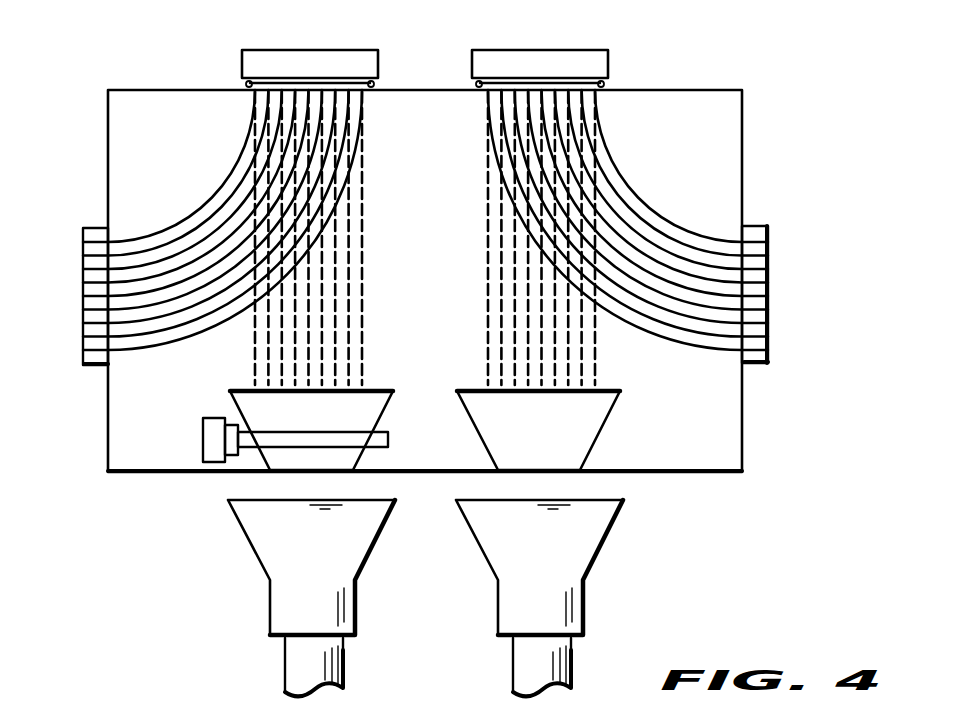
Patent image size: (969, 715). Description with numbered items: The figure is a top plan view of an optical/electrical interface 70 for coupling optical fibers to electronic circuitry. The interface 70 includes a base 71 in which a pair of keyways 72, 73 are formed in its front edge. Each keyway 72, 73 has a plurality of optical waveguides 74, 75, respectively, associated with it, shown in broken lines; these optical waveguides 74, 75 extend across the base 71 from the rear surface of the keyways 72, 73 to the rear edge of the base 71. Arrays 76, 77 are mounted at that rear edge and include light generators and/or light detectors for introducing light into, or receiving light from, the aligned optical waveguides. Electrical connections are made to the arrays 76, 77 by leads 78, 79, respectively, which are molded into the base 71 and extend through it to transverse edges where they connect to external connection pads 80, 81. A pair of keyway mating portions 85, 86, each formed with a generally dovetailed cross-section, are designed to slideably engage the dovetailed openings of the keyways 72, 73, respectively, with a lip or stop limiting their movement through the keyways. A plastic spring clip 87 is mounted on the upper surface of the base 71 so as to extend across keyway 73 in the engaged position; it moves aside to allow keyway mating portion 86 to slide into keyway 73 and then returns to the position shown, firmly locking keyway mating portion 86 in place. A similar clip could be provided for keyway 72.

The optical/electrical interface 70 is at (729, 590).
The base 71 is at (724, 145).
The keyway 72 is at (597, 420).
The keyway 73 is at (245, 400).
The optical waveguides 74 is at (512, 296).
The optical waveguides 75 is at (350, 250).
The array 76 is at (502, 50).
The array 77 is at (340, 50).
The leads 78 is at (608, 176).
The leads 79 is at (232, 190).
The external connection pads 80 is at (768, 296).
The external connection pads 81 is at (83, 332).
The keyway mating portion 85 is at (590, 542).
The keyway mating portion 86 is at (262, 542).
The plastic spring clip 87 is at (215, 446).